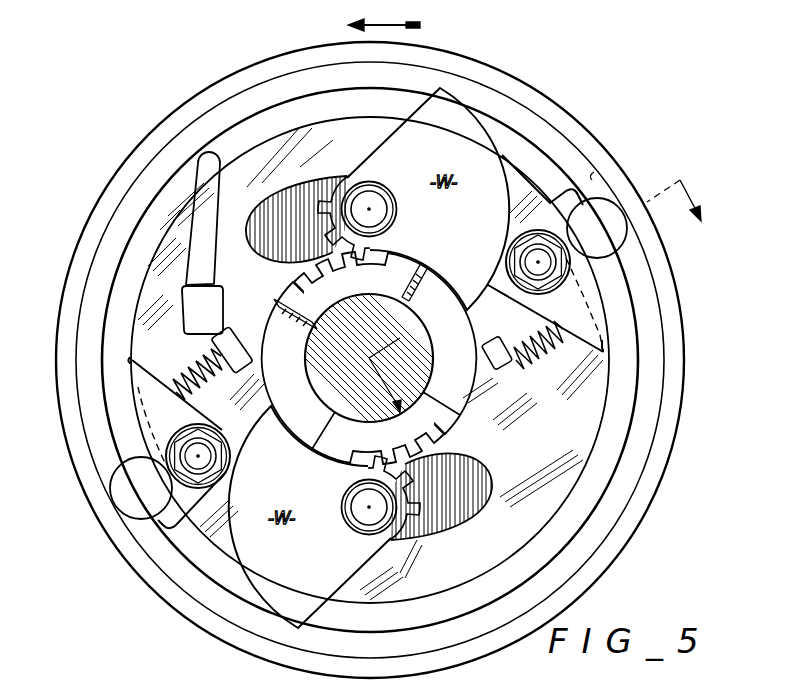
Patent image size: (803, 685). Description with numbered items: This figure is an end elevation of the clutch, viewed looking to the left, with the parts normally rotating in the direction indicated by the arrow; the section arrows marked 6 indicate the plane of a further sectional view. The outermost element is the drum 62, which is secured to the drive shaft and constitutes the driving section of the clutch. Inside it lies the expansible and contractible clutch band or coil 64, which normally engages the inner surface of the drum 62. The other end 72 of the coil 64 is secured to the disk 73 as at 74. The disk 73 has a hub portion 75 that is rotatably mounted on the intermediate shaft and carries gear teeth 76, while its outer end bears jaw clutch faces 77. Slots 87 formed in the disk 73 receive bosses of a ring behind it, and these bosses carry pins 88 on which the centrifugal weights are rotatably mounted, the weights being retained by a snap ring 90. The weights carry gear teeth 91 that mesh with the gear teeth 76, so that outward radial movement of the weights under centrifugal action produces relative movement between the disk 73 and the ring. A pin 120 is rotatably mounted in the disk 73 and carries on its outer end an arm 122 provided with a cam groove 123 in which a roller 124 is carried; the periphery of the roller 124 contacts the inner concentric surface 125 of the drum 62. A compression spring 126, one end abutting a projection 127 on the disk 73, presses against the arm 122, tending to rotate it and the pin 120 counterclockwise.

The drum 62 is at (58, 352).
The clutch coil 64 is at (522, 150).
The other end of the coil 72 is at (201, 227).
The disk 73 is at (178, 344).
The securing point of coil end 74 is at (222, 316).
The hub portion 75 is at (369, 358).
The gear teeth 76 is at (350, 262).
The jaw clutch faces 77 is at (305, 322).
The slots 87 is at (320, 186).
The pins 88 is at (373, 206).
The snap ring 90 is at (395, 209).
The gear teeth 91 is at (366, 254).
The pin 120 is at (538, 264).
The arm 122 is at (608, 352).
The cam groove 123 is at (597, 312).
The roller 124 is at (617, 230).
The inner concentric surface 125 is at (593, 176).
The compression spring 126 is at (556, 370).
The projection 127 is at (493, 366).
The section line 6 is at (541, 307).